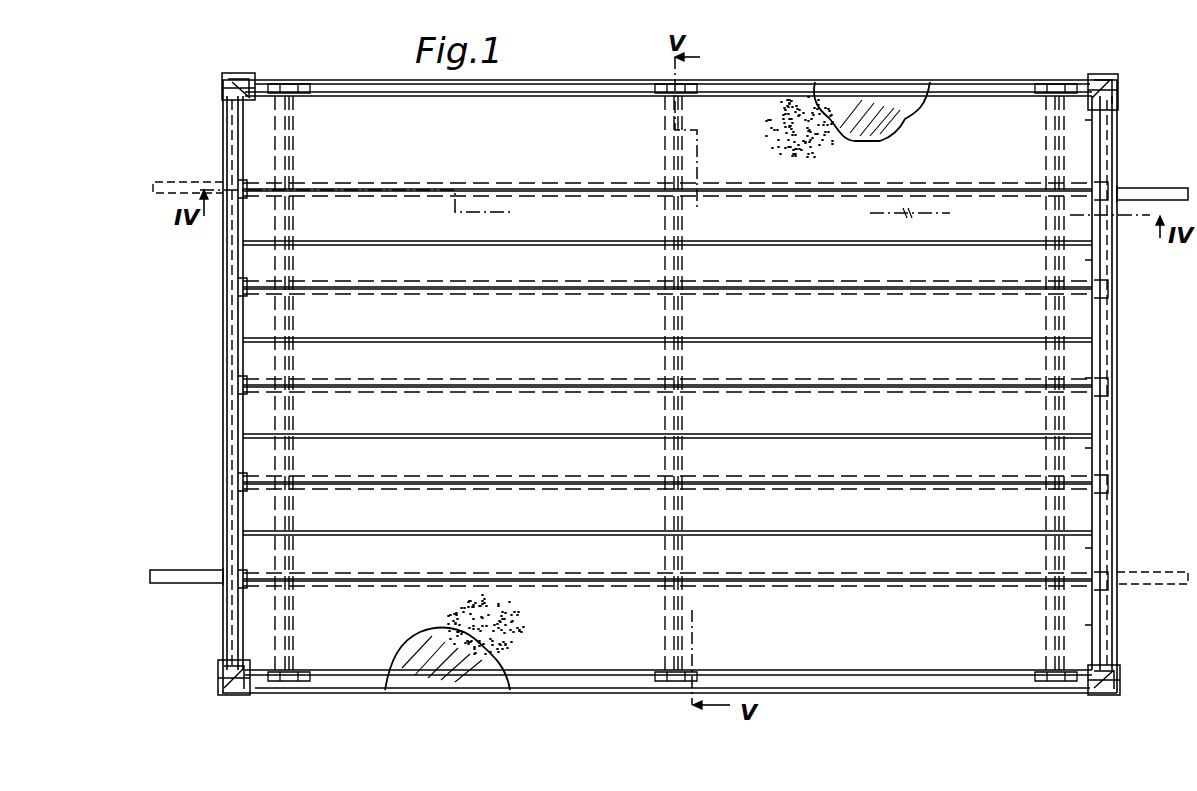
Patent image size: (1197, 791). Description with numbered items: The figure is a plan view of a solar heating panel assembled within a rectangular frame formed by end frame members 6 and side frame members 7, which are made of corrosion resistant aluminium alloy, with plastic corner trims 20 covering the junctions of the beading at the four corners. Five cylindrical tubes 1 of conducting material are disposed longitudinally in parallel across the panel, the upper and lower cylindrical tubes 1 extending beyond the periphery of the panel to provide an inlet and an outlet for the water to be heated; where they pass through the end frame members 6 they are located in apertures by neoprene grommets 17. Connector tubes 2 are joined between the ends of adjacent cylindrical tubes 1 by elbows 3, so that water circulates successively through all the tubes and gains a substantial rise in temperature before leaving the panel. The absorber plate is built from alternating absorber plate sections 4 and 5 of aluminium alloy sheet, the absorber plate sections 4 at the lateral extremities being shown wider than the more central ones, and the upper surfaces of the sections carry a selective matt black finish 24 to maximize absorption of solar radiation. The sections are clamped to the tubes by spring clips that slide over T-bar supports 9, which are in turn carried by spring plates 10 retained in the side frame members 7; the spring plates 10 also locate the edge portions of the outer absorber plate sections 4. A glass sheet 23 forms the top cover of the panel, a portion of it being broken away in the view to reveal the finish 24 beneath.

The cylindrical tubes 1 is at (603, 185).
The connector tubes 2 is at (225, 250).
The elbows 3 is at (237, 180).
The absorber plate sections 4 is at (1085, 122).
The absorber plate sections 5 is at (1085, 228).
The end frame members 6 is at (223, 356).
The side frame members 7 is at (592, 82).
The T-bar supports 9 is at (298, 160).
The spring plates 10 is at (308, 85).
The neoprene grommets 17 is at (1118, 190).
The plastic corner trims 20 is at (247, 84).
The glass sheet 23 is at (878, 113).
The selective matt black finish 24 is at (820, 136).